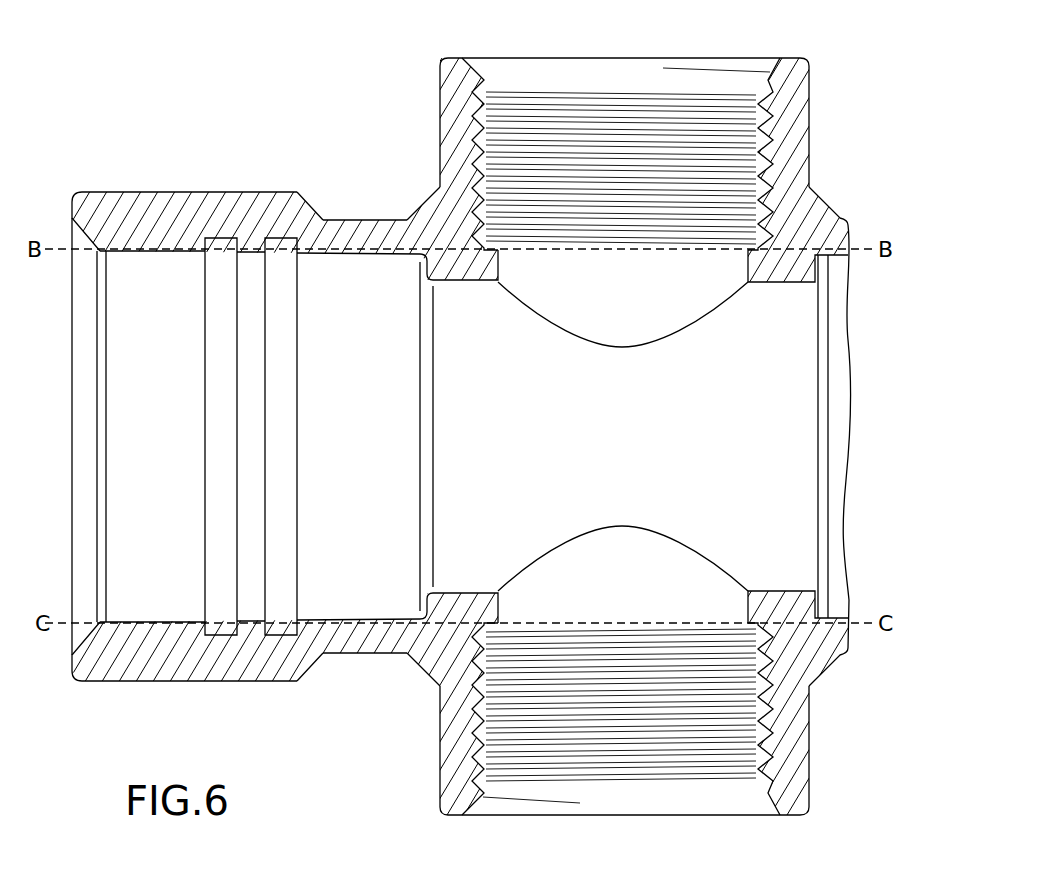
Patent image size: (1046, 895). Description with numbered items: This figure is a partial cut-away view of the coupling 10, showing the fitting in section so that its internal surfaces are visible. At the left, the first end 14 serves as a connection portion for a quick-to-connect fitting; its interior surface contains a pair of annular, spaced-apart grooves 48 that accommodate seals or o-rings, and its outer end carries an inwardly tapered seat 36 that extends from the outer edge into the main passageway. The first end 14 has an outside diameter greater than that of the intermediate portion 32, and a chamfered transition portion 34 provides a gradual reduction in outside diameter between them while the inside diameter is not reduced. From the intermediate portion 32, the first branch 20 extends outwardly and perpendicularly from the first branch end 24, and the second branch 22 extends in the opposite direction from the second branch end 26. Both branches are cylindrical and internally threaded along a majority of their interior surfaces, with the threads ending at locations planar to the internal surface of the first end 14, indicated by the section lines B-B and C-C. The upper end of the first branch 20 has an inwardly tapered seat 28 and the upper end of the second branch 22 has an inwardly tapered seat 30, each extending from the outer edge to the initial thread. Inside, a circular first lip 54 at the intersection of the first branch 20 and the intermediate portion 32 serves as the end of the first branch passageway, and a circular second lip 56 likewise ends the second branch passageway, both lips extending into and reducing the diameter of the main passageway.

The coupling 10 is at (270, 80).
The first end 14 is at (92, 192).
The first branch 20 is at (811, 130).
The second branch 22 is at (811, 750).
The first branch end 24 is at (407, 219).
The second branch end 26 is at (418, 663).
The inwardly tapered seat 28 is at (790, 58).
The inwardly tapered seat 30 is at (765, 795).
The intermediate portion 32 is at (352, 219).
The transition portion 34 is at (313, 210).
The inwardly tapered seat 36 is at (88, 540).
The grooves 48 is at (278, 268).
The first lip 54 is at (422, 440).
The second lip 56 is at (832, 430).